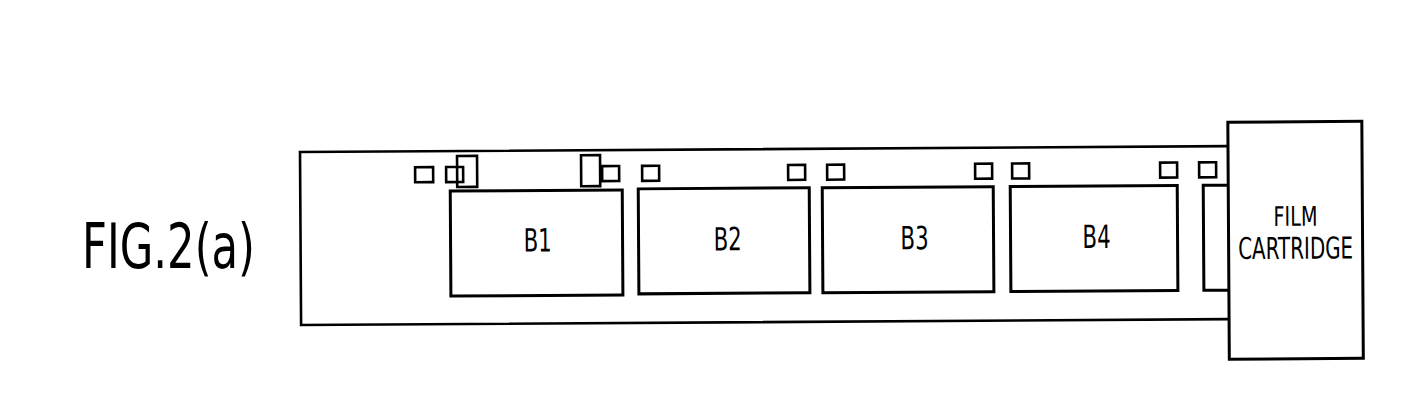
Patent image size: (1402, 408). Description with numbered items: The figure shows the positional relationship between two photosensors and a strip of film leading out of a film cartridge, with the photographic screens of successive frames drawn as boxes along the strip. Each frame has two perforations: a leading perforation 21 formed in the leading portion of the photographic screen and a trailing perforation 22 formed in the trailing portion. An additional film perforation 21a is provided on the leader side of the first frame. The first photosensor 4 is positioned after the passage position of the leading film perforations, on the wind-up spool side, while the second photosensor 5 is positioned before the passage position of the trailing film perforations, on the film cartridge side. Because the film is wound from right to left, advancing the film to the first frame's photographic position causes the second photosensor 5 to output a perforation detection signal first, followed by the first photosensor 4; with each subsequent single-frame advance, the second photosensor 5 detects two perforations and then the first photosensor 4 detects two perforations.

The film perforation 21a is at (423, 168).
The first photosensor 4 is at (461, 157).
The second photosensor 5 is at (590, 157).
The leading perforation 21 is at (650, 168).
The trailing perforation 22 is at (792, 168).